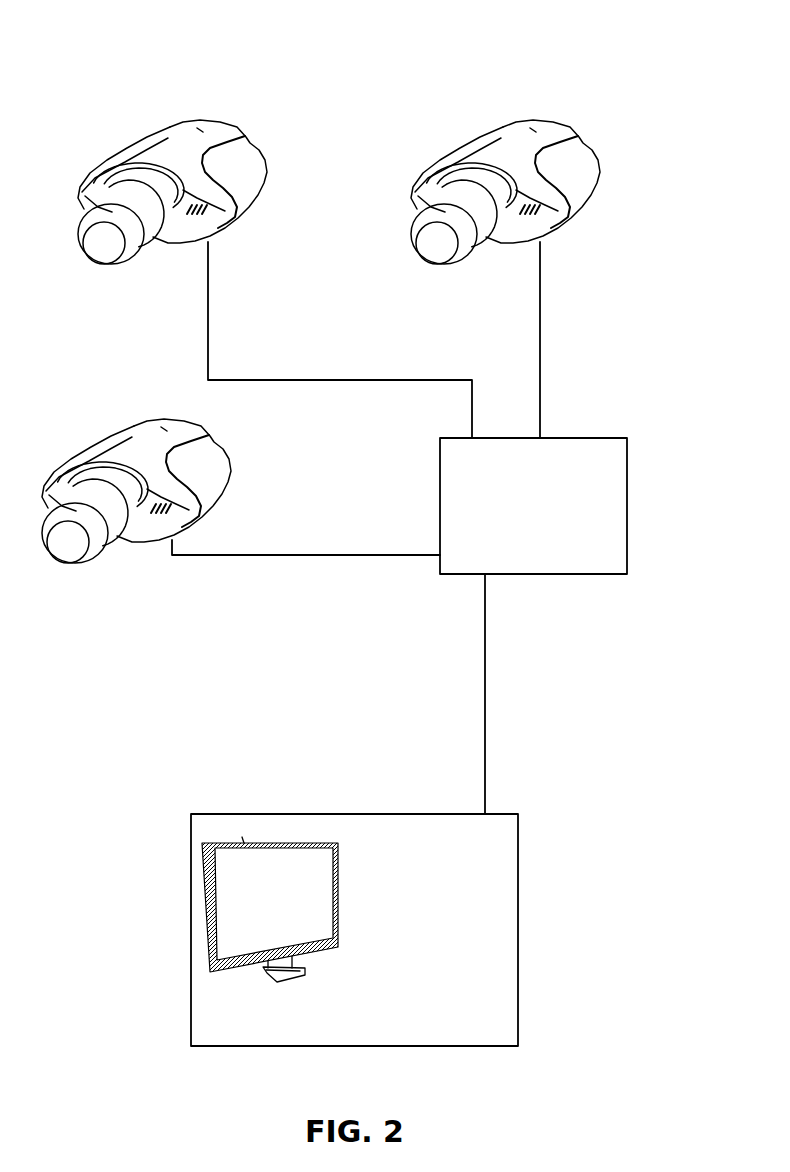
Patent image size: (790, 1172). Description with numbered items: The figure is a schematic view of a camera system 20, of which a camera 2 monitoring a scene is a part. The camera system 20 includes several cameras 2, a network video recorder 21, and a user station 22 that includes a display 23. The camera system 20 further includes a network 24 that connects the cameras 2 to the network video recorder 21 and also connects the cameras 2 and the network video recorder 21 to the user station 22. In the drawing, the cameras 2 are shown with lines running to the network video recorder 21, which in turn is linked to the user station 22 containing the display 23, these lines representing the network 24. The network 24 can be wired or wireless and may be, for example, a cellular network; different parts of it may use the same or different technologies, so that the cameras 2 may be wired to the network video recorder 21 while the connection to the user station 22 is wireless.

The camera 2 is at (243, 160).
The camera system 20 is at (100, 82).
The network video recorder 21 is at (628, 487).
The user station 22 is at (518, 858).
The display 23 is at (203, 893).
The network 24 is at (208, 605).